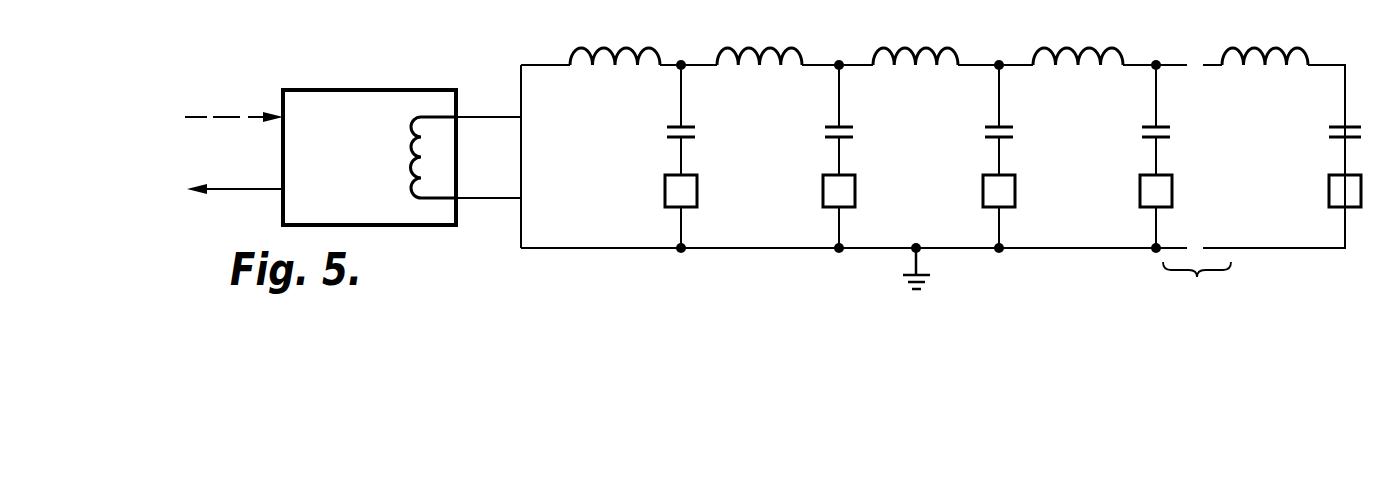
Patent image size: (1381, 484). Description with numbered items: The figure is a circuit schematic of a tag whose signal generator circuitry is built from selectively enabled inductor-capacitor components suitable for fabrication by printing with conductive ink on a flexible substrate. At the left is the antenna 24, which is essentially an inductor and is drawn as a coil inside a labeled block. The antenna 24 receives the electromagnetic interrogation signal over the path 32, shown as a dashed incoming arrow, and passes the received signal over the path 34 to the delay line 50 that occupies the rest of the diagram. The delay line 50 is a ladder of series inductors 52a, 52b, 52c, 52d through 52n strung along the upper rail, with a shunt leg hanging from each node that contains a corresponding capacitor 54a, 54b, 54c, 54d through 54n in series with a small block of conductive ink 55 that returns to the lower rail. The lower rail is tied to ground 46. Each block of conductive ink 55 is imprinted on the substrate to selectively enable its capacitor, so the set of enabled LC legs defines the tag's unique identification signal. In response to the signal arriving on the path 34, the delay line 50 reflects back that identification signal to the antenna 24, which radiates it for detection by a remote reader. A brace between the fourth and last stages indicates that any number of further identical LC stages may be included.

The antenna 24 is at (372, 90).
The path 32 is at (230, 115).
The path 34 is at (490, 117).
The ground 46 is at (918, 261).
The delay line 50 is at (389, 54).
The inductor 52a is at (623, 55).
The inductor 52b is at (777, 55).
The inductor 52c is at (935, 55).
The inductor 52d is at (1100, 55).
The inductor 52n is at (1290, 55).
The capacitor 54a is at (668, 140).
The capacitor 54b is at (828, 140).
The capacitor 54c is at (987, 140).
The capacitor 54d is at (1146, 140).
The capacitor 54n is at (1332, 140).
The conductive ink 55 is at (665, 190).